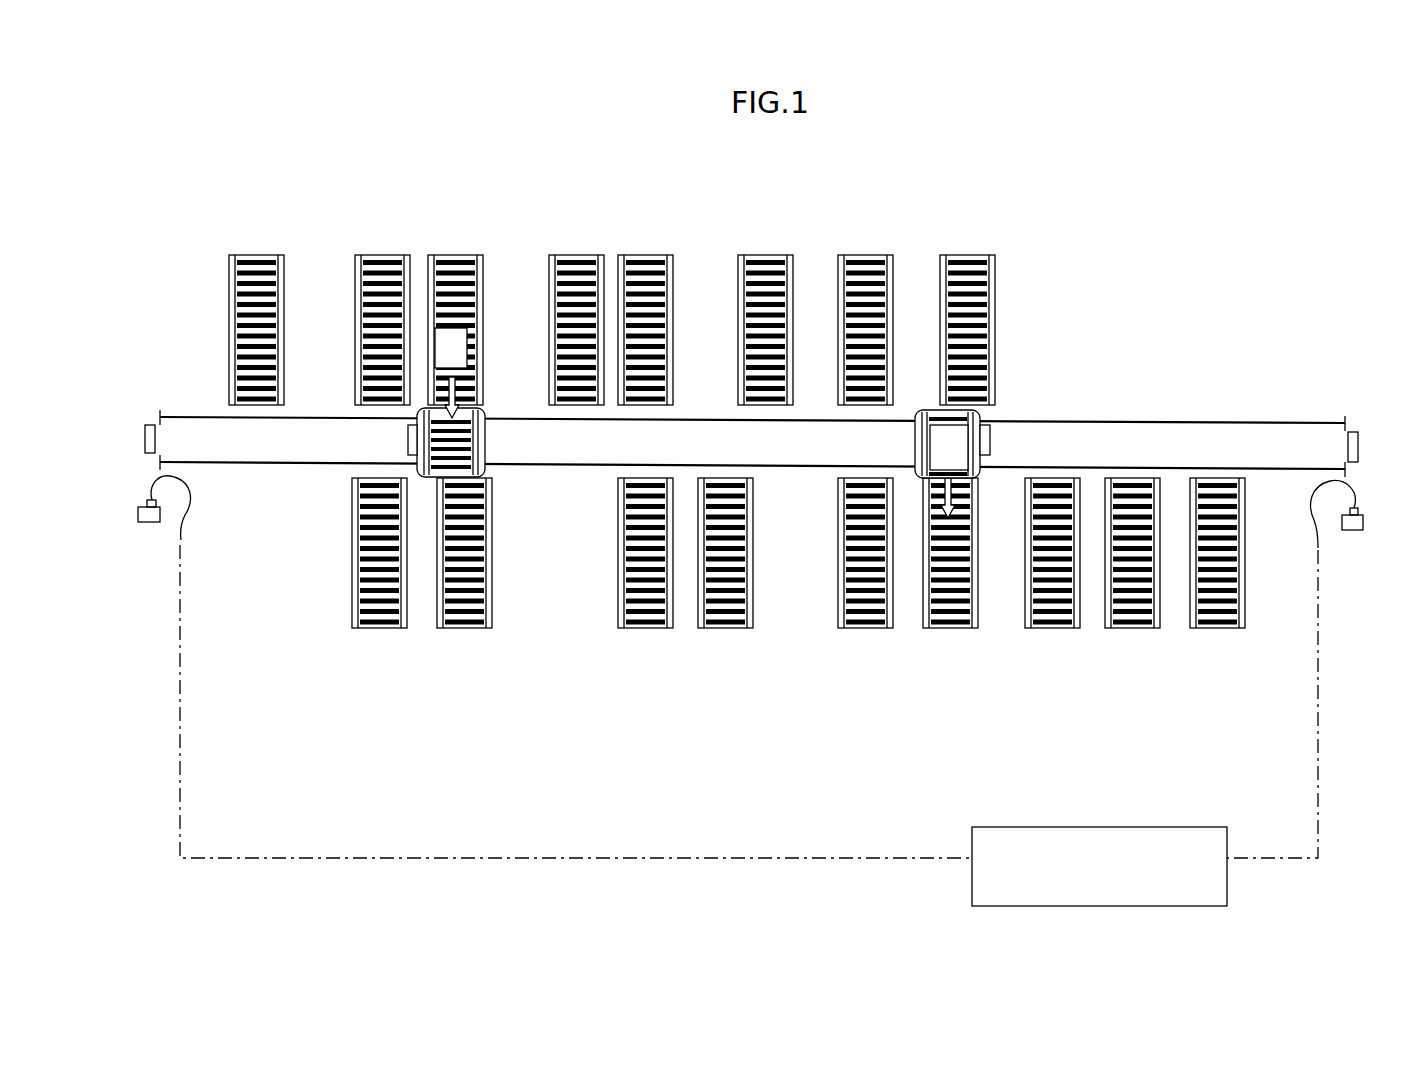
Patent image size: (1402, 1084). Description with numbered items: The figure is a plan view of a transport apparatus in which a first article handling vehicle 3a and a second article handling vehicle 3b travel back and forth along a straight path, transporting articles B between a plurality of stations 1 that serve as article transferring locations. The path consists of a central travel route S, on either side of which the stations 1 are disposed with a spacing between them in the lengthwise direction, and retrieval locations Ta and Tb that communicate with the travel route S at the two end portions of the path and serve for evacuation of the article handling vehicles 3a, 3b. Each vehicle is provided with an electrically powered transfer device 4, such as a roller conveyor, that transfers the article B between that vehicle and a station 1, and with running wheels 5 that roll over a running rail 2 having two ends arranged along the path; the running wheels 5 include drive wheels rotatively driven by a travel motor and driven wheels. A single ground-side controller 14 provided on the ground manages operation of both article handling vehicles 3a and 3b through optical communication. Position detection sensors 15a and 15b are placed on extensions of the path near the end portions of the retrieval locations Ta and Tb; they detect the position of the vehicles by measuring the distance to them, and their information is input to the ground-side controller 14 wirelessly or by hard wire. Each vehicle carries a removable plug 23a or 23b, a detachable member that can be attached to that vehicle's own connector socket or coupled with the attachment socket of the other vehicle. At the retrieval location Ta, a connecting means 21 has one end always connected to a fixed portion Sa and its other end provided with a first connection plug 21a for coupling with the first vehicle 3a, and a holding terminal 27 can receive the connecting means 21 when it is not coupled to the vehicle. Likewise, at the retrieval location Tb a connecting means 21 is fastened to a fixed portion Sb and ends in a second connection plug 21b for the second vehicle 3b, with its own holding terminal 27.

The station 1 is at (257, 248).
The running rail 2 is at (1182, 468).
The first article handling vehicle 3a is at (487, 442).
The second article handling vehicle 3b is at (975, 412).
The transfer device 4 is at (453, 472).
The running wheels 5 is at (922, 410).
The ground-side controller 14 is at (1105, 827).
The position detection sensor 15a is at (145, 425).
The position detection sensor 15b is at (1354, 432).
The connecting means 21 is at (198, 514).
The first connection plug 21a is at (138, 503).
The second connection plug 21b is at (1363, 520).
The removable plug 23a is at (408, 440).
The removable plug 23b is at (990, 440).
The holding terminal 27 is at (148, 523).
The article B is at (462, 345).
The travel route S is at (622, 450).
The fixed portion Sa is at (183, 537).
The fixed portion Sb is at (1318, 547).
The retrieval location Ta is at (178, 440).
The retrieval location Tb is at (1313, 440).